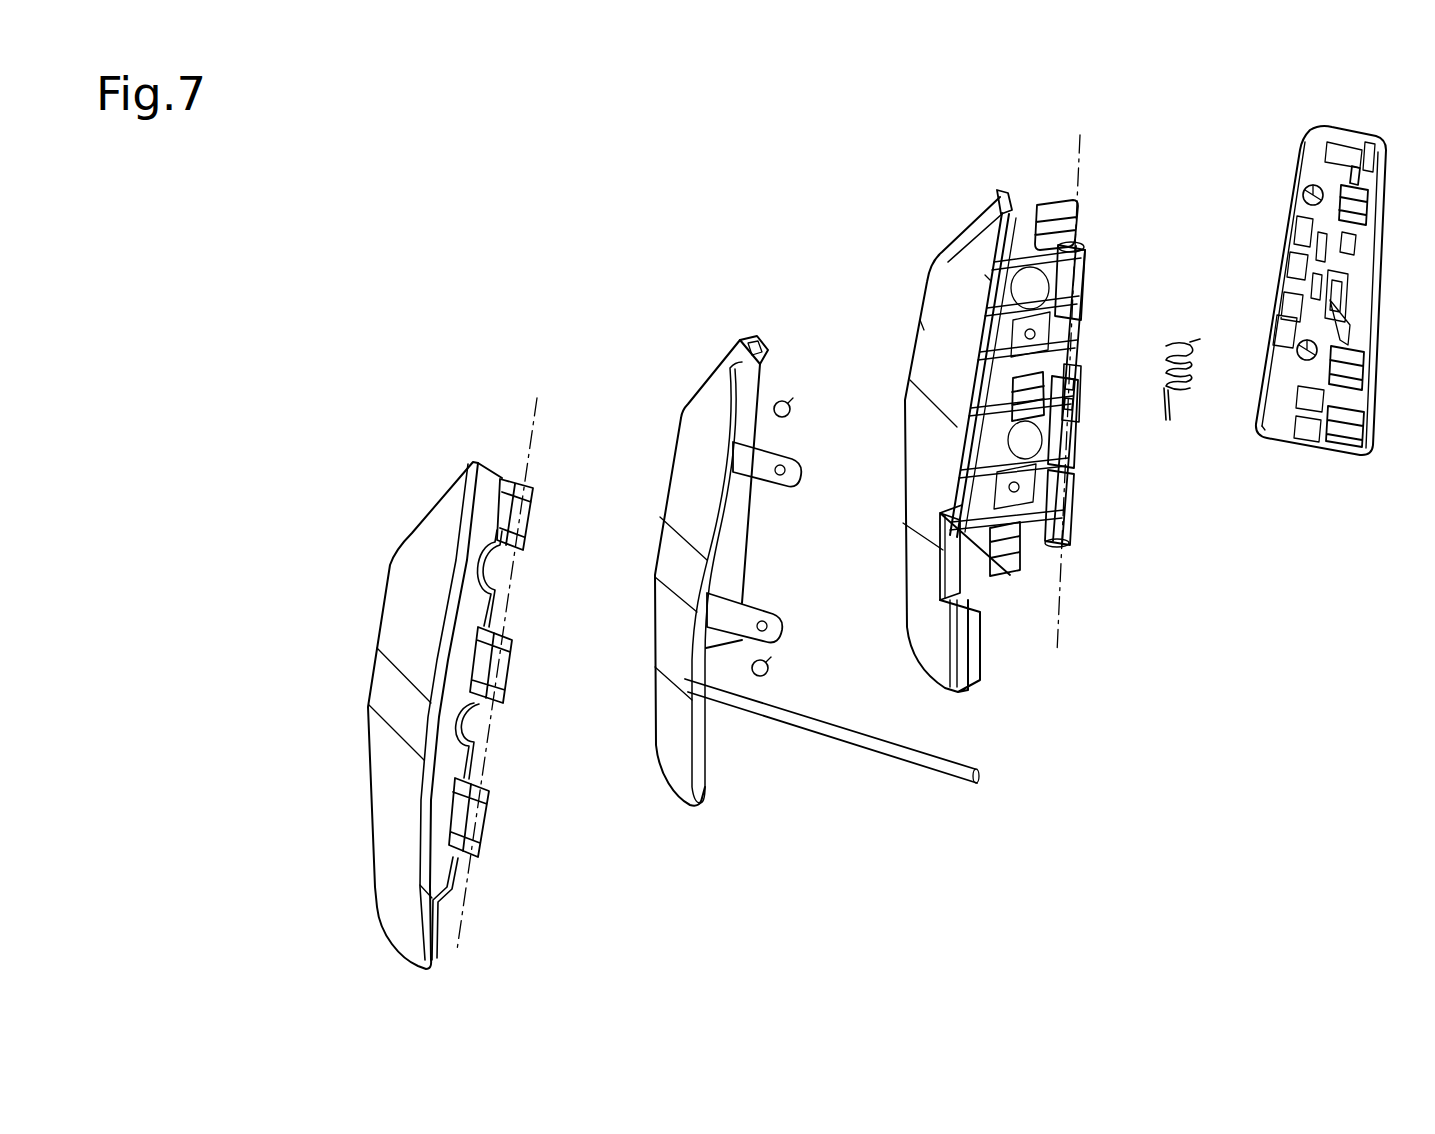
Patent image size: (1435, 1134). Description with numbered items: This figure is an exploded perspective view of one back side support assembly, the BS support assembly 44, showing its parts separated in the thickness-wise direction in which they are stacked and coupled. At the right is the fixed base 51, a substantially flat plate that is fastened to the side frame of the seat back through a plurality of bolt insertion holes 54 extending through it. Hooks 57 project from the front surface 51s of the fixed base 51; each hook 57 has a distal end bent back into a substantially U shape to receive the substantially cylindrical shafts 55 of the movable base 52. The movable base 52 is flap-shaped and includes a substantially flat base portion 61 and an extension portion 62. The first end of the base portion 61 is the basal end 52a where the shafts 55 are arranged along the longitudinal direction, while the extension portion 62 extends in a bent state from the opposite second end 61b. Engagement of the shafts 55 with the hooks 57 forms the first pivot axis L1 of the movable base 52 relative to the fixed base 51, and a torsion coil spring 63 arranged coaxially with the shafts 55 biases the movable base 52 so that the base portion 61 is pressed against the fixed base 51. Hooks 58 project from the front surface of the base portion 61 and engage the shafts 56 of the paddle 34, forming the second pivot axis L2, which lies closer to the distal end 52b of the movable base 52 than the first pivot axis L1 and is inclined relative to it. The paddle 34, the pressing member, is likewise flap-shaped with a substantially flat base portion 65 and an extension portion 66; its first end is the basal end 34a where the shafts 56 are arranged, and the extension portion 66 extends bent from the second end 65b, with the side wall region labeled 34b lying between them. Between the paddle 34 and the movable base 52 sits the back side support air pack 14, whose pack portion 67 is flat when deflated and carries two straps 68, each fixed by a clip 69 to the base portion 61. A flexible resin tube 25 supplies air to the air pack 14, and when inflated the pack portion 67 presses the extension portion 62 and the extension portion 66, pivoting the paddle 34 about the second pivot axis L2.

The BS support assembly 44 is at (348, 161).
The paddle 34 is at (353, 463).
The basal end of paddle 34a is at (452, 864).
The side wall of cover 34b is at (385, 603).
The base portion of paddle 65 is at (485, 497).
The second end of paddle base portion 65b is at (417, 878).
The extension portion of paddle 66 is at (385, 762).
The shafts of paddle 56 is at (528, 512).
The second pivot axis L2 is at (537, 394).
The back side support air pack 14 is at (691, 347).
The pack portion 67 is at (690, 436).
The straps 68 is at (762, 457).
The clip 69 is at (788, 398).
The tube 25 is at (950, 775).
The movable base 52 is at (916, 256).
The basal end of movable base 52a is at (1074, 372).
The distal end of movable base 52b is at (922, 325).
The base portion of movable base 61 is at (995, 207).
The second end of movable base base portion 61b is at (985, 278).
The hooks of movable base 58 is at (1036, 212).
The shafts of movable base 55 is at (1080, 280).
The extension portion of movable base 62 is at (930, 503).
The first pivot axis L1 is at (1082, 135).
The fixed base 51 is at (1280, 155).
The front surface of fixed base 51s is at (1298, 418).
The bolt insertion holes 54 is at (1300, 192).
The hooks of fixed base 57 is at (1370, 206).
The torsion coil spring 63 is at (1190, 383).